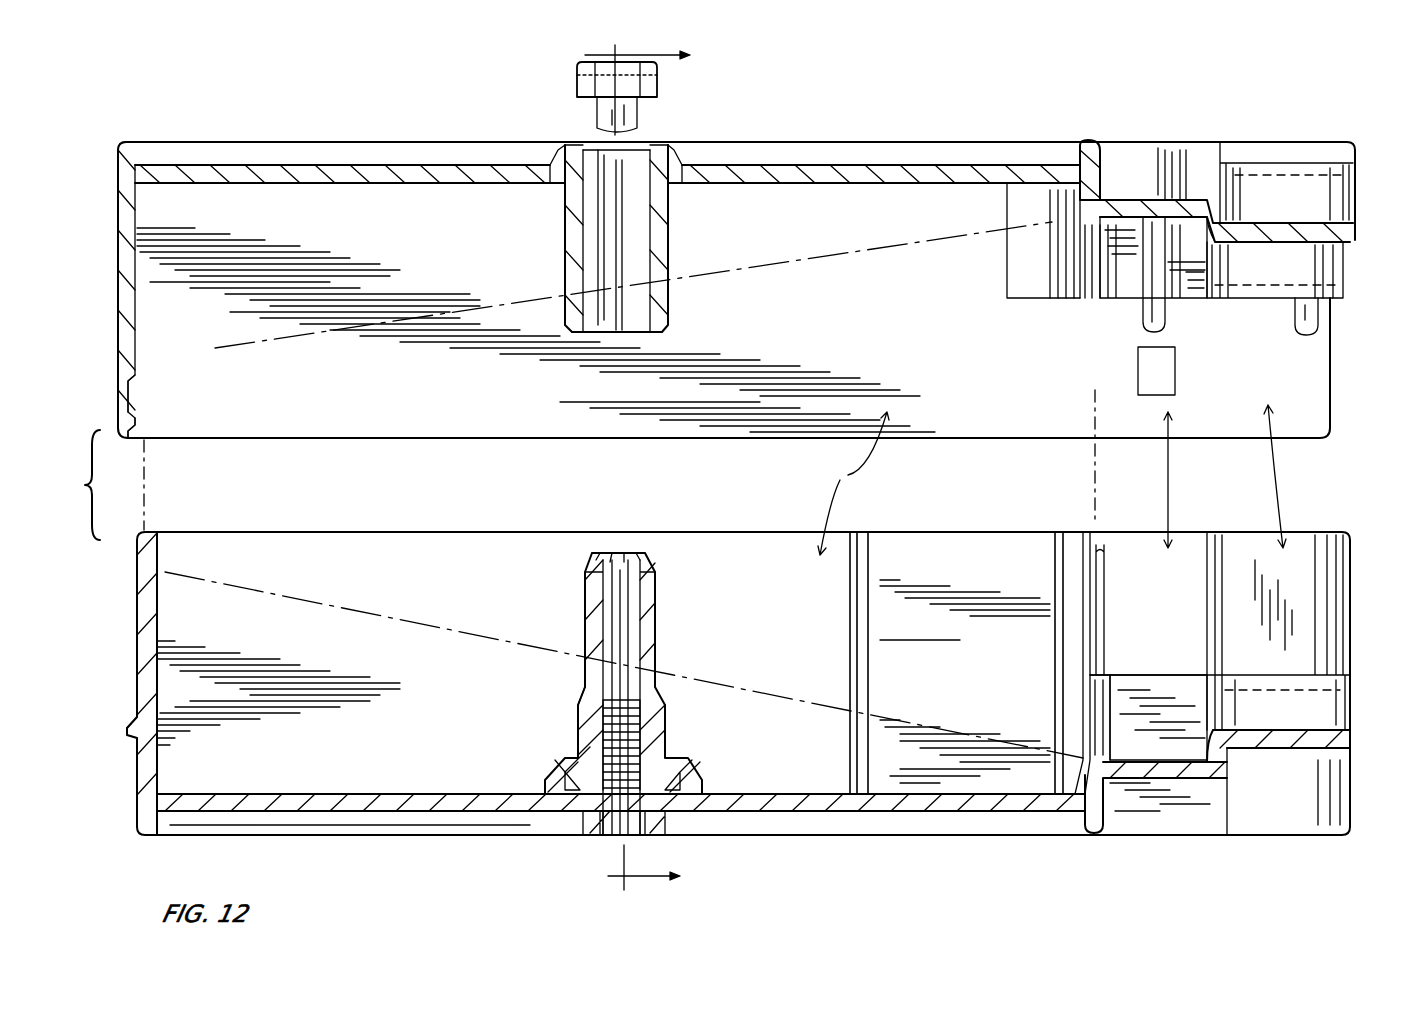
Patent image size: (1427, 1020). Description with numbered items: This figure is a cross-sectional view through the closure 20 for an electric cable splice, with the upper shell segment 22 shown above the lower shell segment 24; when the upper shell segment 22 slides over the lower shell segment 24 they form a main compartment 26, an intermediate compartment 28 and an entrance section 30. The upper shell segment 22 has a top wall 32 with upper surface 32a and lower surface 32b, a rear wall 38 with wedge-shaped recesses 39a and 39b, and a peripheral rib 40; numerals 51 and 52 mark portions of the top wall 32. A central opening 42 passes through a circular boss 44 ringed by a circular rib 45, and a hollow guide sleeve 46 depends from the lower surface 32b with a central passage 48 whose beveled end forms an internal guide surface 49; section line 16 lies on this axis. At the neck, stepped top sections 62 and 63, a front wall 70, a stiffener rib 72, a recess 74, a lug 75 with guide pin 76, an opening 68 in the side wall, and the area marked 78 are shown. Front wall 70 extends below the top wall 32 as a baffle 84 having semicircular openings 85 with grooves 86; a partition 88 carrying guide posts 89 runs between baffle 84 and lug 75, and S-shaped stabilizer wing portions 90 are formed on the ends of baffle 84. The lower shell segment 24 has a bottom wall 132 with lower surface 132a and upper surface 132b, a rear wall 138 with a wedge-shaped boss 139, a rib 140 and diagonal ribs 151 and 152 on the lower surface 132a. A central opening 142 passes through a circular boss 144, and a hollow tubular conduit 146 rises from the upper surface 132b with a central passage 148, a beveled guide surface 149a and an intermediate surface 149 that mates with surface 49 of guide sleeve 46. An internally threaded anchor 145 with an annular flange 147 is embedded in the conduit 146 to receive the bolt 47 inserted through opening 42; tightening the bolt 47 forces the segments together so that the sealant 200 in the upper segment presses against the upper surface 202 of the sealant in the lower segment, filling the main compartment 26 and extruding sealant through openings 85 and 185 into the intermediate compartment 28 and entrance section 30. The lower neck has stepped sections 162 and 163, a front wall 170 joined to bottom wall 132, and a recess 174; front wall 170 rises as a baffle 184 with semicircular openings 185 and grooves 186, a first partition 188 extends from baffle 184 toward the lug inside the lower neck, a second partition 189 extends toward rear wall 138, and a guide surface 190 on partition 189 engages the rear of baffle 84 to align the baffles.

The section line 16 is at (619, 474).
The closure 20 is at (508, 856).
The upper shell segment 22 is at (316, 453).
The lower shell segment 24 is at (454, 520).
The main compartment 26 is at (844, 483).
The intermediate compartment 28 is at (1143, 480).
The entrance section 30 is at (1260, 476).
The top wall 32 is at (232, 162).
The upper surface of top wall 32a is at (792, 165).
The lower surface of top wall 32b is at (792, 185).
The rear wall 38 is at (120, 245).
The wedge-shaped recess 39a is at (133, 382).
The wedge-shaped recess 39b is at (134, 420).
The peripherally extending rib 40 is at (122, 140).
The central opening 42 is at (630, 150).
The circular boss 44 is at (560, 150).
The circular rib 45 is at (680, 150).
The hollow guide sleeve 46 is at (668, 262).
The bolt 47 is at (650, 85).
The central passage 48 is at (628, 262).
The internal guide surface 49 is at (590, 325).
The top wall portion 51 is at (378, 160).
The top wall portion 52 is at (910, 158).
The stepped top section 62 is at (1150, 200).
The stepped top section 63 is at (1282, 235).
The opening 68 is at (1160, 378).
The front wall 70 is at (1095, 150).
The stiffener rib 72 is at (1180, 185).
The recess 74 is at (1300, 283).
The lug 75 is at (1300, 262).
The guide pin 76 is at (1318, 325).
The end pocket 78 is at (1325, 210).
The baffle 84 is at (1068, 232).
The semicircular opening 85 is at (1085, 290).
The groove 86 is at (1095, 300).
The partition 88 is at (1185, 295).
The guide post 89 is at (1165, 325).
The stabilizer wing portion 90 is at (1020, 210).
The bottom wall 132 is at (890, 813).
The lower surface of bottom wall 132a is at (745, 813).
The upper surface of bottom wall 132b is at (745, 793).
The rear wall 138 is at (140, 600).
The wedge-shaped boss 139 is at (132, 725).
The rib 140 is at (360, 838).
The central opening 142 is at (640, 828).
The circular boss 144 is at (592, 826).
The internally threaded anchor 145 is at (600, 718).
The hollow tubular conduit 146 is at (655, 672).
The annular flange 147 is at (575, 785).
The central passage 148 is at (625, 660).
The surface 149 is at (583, 698).
The guide surface 149a is at (650, 570).
The diagonally extending rib 151 is at (268, 838).
The diagonally extending rib 152 is at (985, 820).
The stepped section 162 is at (1190, 778).
The stepped section 163 is at (1325, 740).
The front wall 170 is at (1105, 805).
The recess 174 is at (1295, 715).
The baffle 184 is at (1085, 750).
The semicircular opening 185 is at (1085, 695).
The groove 186 is at (1105, 665).
The first partition 188 is at (1145, 685).
The second partition 189 is at (900, 640).
The guide surface 190 is at (1093, 558).
The sealant 200 is at (250, 345).
The upper surface of sealant 202 is at (470, 625).